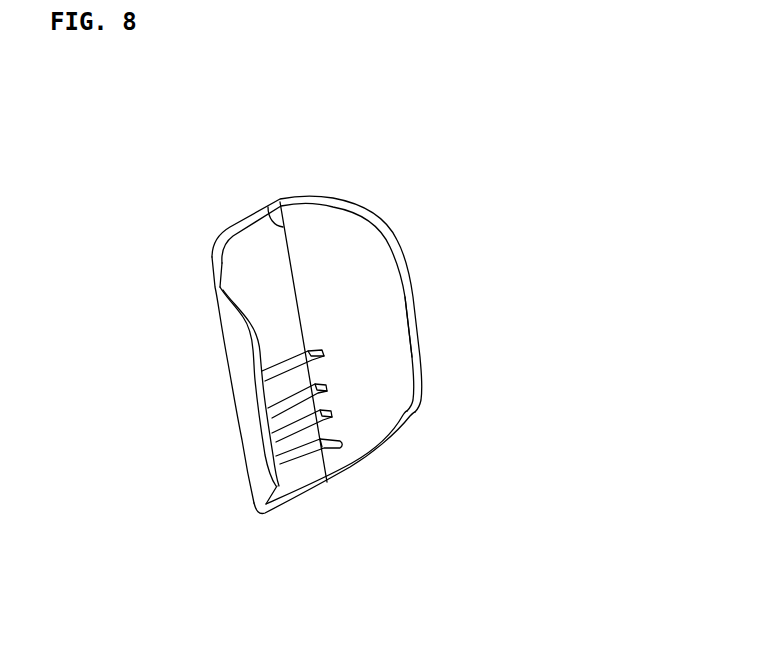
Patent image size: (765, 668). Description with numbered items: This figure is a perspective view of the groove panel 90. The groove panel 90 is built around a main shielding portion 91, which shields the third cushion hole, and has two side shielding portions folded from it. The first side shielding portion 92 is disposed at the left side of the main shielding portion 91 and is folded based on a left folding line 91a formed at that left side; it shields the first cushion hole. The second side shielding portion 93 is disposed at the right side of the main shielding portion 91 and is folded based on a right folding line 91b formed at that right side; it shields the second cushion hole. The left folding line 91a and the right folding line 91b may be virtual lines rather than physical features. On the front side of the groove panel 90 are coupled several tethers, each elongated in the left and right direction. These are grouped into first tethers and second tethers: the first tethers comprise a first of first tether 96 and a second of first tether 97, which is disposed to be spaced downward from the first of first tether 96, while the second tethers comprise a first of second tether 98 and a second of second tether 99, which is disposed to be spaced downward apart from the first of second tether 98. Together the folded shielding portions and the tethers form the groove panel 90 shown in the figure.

The groove panel 90 is at (148, 150).
The main shielding portion 91 is at (303, 487).
The left folding line 91a is at (228, 368).
The right folding line 91b is at (277, 225).
The first side shielding portion 92 is at (257, 440).
The second side shielding portion 93 is at (377, 288).
The first of first tether 96 is at (325, 350).
The second of first tether 97 is at (343, 446).
The first of second tether 98 is at (327, 387).
The second of second tether 99 is at (332, 414).